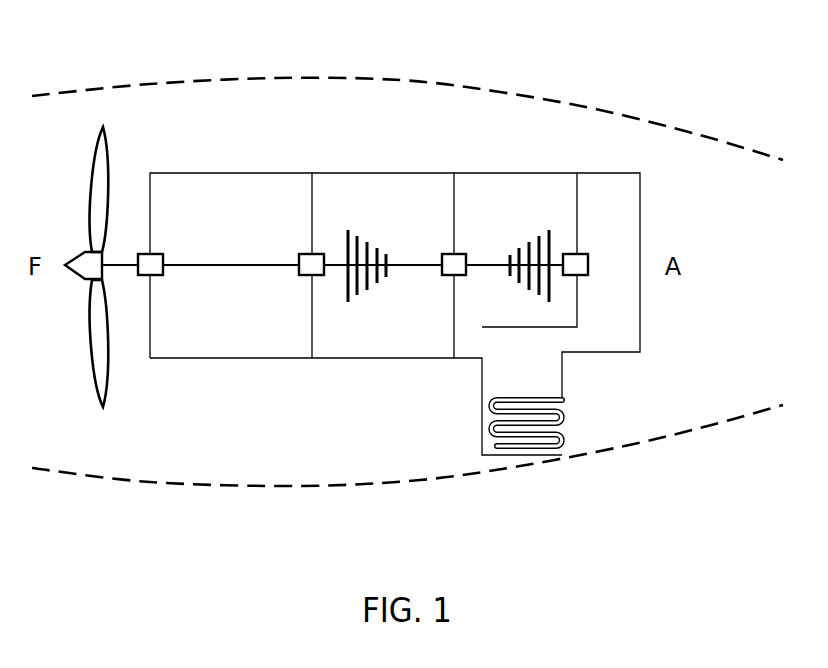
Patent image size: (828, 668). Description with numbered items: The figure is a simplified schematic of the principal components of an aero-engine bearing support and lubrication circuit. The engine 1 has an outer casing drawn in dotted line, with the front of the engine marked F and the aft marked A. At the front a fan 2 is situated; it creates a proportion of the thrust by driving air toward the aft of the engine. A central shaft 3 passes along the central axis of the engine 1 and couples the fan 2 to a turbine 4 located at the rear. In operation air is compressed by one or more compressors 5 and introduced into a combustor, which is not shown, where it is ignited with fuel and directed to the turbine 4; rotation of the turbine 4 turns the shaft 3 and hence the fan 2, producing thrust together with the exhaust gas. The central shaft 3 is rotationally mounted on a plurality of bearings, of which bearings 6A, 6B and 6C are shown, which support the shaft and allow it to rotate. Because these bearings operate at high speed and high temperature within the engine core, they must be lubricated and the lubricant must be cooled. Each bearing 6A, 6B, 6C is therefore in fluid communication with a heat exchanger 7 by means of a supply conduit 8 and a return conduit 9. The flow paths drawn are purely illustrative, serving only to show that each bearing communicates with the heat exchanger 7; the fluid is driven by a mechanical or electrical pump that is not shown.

The engine 1 is at (698, 97).
The fan 2 is at (100, 135).
The central shaft 3 is at (218, 263).
The turbine 4 is at (522, 245).
The compressor 5 is at (363, 238).
The bearing 6A is at (152, 276).
The bearing 6B is at (305, 276).
The bearing 6C is at (447, 276).
The heat exchanger 7 is at (508, 457).
The supply conduit 8 is at (467, 359).
The return conduit 9 is at (640, 215).